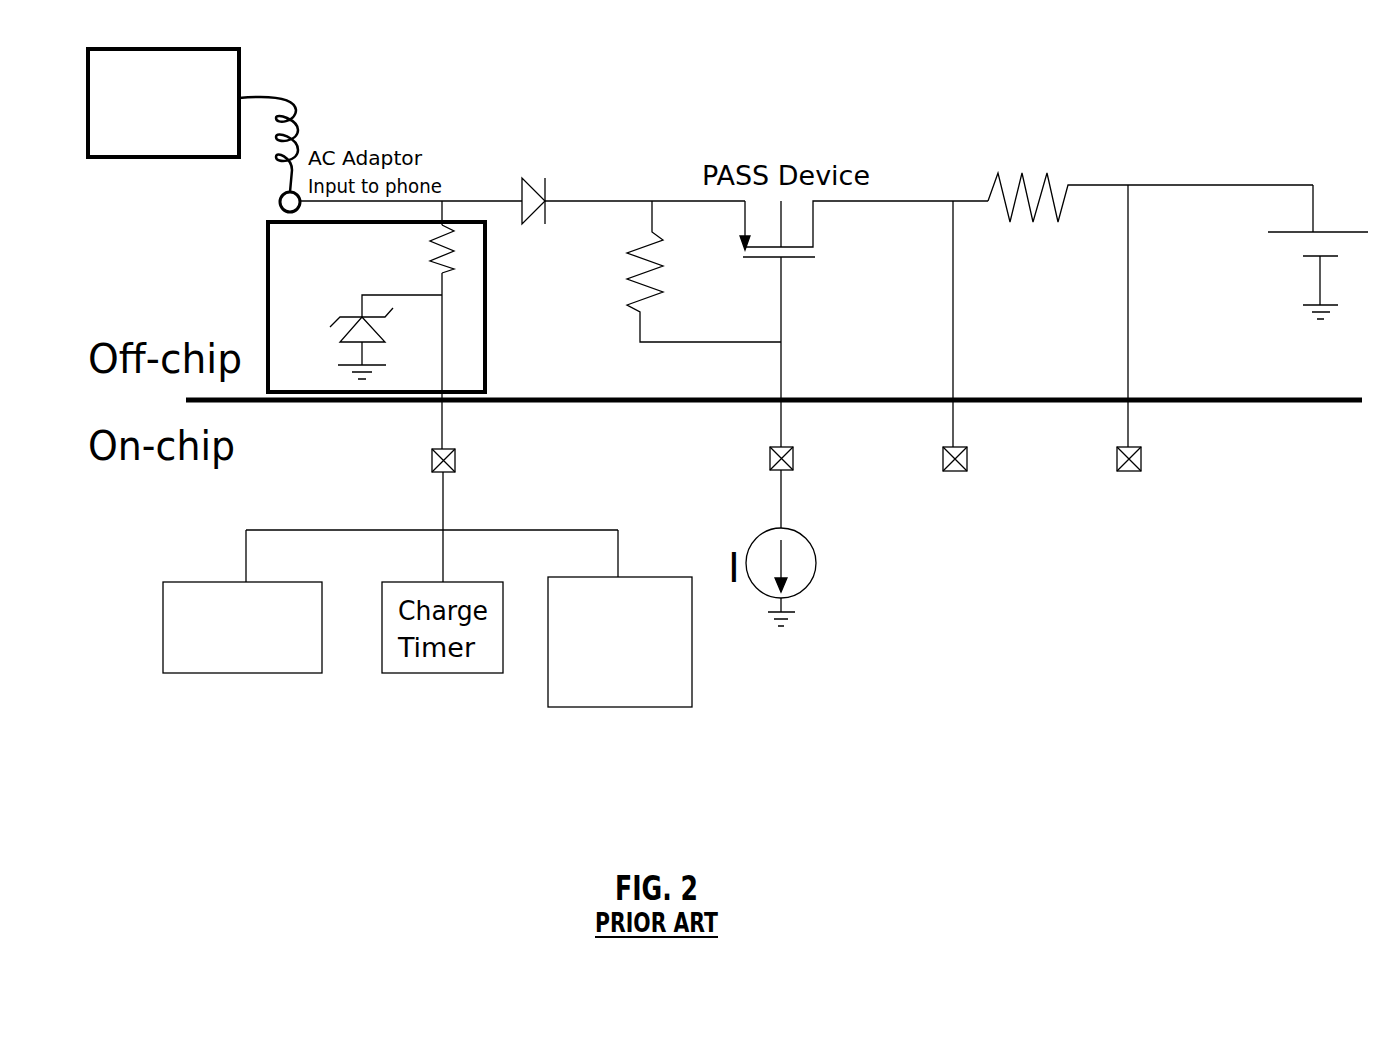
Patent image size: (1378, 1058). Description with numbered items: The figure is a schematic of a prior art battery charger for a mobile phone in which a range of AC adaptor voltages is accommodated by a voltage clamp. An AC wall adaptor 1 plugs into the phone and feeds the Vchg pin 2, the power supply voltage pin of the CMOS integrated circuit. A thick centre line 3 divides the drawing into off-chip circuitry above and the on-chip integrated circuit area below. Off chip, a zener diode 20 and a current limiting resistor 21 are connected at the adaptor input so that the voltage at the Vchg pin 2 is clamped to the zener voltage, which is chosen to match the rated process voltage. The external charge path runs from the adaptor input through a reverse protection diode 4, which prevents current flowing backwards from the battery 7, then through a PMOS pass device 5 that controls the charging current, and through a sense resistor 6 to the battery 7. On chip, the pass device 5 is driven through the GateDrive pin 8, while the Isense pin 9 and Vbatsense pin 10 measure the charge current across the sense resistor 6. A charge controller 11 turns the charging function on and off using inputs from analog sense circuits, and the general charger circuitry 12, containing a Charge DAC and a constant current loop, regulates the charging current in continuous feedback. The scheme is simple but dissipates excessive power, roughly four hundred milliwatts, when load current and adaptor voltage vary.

The wall adaptor 1 is at (238, 84).
The Vchg pin 2 is at (430, 463).
The centre line 3 is at (1258, 397).
The reverse protection diode 4 is at (548, 190).
The PMOS pass device 5 is at (825, 252).
The sense resistor 6 is at (1040, 208).
The battery 7 is at (1290, 232).
The GateDrive pin 8 is at (770, 454).
The Isense pin 9 is at (943, 455).
The Vbatsense pin 10 is at (1117, 455).
The charge controller 11 is at (262, 675).
The general charger circuitry 12 is at (695, 648).
The Zener diode 20 is at (345, 317).
The current limiting resistor 21 is at (455, 263).